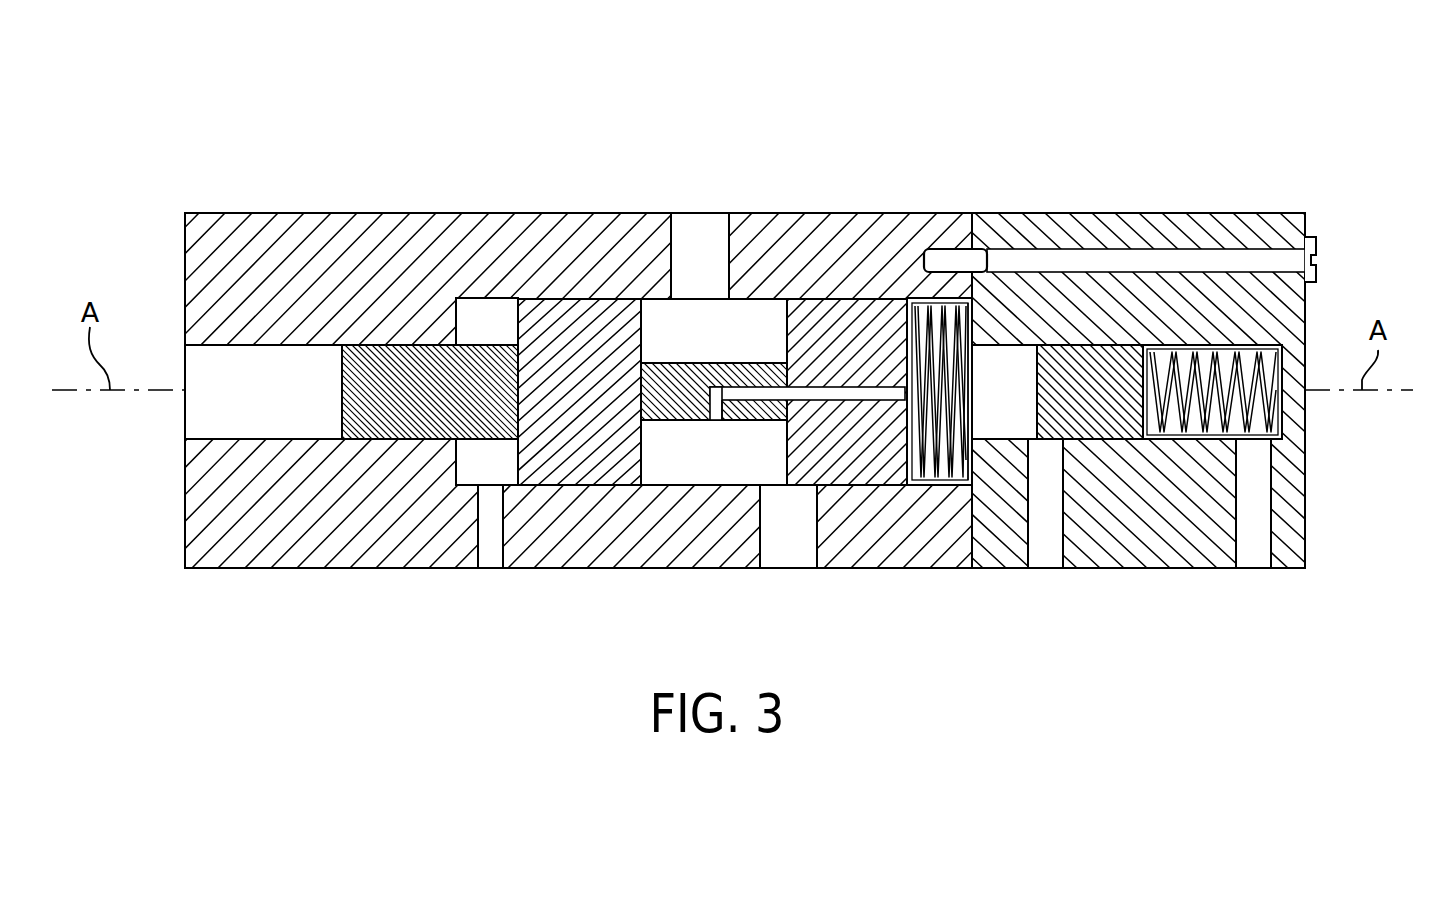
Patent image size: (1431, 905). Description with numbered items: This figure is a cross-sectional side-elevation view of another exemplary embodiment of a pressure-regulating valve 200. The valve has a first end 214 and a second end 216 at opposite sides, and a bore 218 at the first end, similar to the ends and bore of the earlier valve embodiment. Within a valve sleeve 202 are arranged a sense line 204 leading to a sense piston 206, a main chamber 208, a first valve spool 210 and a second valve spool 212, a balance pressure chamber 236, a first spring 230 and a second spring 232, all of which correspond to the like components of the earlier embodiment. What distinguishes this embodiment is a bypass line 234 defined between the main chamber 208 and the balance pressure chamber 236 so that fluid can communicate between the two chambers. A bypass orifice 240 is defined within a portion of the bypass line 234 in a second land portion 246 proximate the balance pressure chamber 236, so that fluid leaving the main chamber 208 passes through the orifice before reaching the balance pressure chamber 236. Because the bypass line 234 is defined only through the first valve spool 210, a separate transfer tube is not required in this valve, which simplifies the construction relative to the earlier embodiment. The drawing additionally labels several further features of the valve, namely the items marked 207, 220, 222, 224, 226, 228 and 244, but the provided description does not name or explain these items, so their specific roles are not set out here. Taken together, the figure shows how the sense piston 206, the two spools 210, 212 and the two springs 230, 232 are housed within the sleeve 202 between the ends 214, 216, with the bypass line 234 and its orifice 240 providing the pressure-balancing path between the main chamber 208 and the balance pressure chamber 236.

The pressure-regulating valve 200 is at (1054, 154).
The valve sleeve 202 is at (560, 213).
The sense line 204 is at (238, 420).
The sense piston 206 is at (355, 420).
The seal 207 is at (480, 315).
The main chamber 208 is at (697, 458).
The first valve spool 210 is at (815, 317).
The second valve spool 212 is at (1107, 430).
The first end 214 is at (185, 252).
The second end 216 is at (1308, 318).
The bore 218 is at (158, 430).
The first port 220 is at (702, 232).
The second port 222 is at (778, 553).
The top surface 224 is at (400, 207).
The adjustment rod 226 is at (1178, 213).
The screw head 228 is at (1317, 247).
The first spring 230 is at (945, 457).
The second spring 232 is at (1243, 412).
The bypass line 234 is at (828, 392).
The balance pressure chamber 236 is at (1003, 362).
The bypass orifice 240 is at (891, 384).
The sleeve 244 is at (572, 473).
The second land portion 246 is at (883, 467).